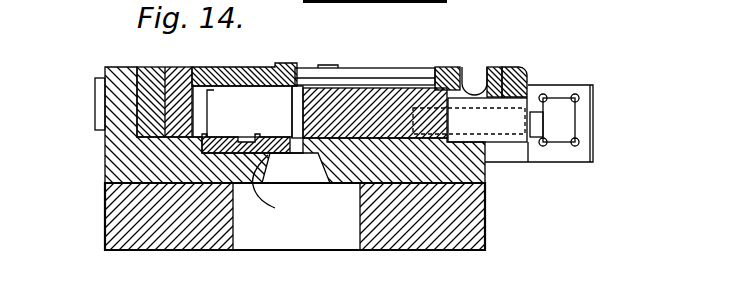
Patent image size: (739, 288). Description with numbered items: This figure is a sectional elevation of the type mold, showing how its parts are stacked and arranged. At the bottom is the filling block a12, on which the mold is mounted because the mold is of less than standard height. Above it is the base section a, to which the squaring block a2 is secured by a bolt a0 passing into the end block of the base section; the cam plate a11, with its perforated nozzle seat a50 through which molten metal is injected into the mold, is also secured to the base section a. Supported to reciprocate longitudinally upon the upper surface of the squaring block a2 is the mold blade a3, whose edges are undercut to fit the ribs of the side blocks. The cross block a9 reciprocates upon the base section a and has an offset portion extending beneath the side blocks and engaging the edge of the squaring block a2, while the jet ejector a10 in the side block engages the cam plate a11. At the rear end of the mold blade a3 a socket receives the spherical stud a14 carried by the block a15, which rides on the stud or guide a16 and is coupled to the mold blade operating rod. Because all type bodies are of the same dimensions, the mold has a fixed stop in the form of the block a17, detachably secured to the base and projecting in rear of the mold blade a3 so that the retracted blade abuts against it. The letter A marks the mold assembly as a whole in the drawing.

The frame A is at (76, 104).
The base section a is at (105, 162).
The bolt a0 is at (361, 0).
The squaring block a2 is at (313, 107).
The mold blade a3 is at (400, 80).
The cross block a9 is at (252, 50).
The jet ejector a10 is at (248, 112).
The cam plate a11 is at (296, 202).
The filling block a12 is at (152, 217).
The spherical stud a14 is at (470, 80).
The block a15 is at (492, 107).
The stud or guide a16 is at (537, 123).
The stop block a17 is at (530, 75).
The perforated nozzle seat a50 is at (266, 160).